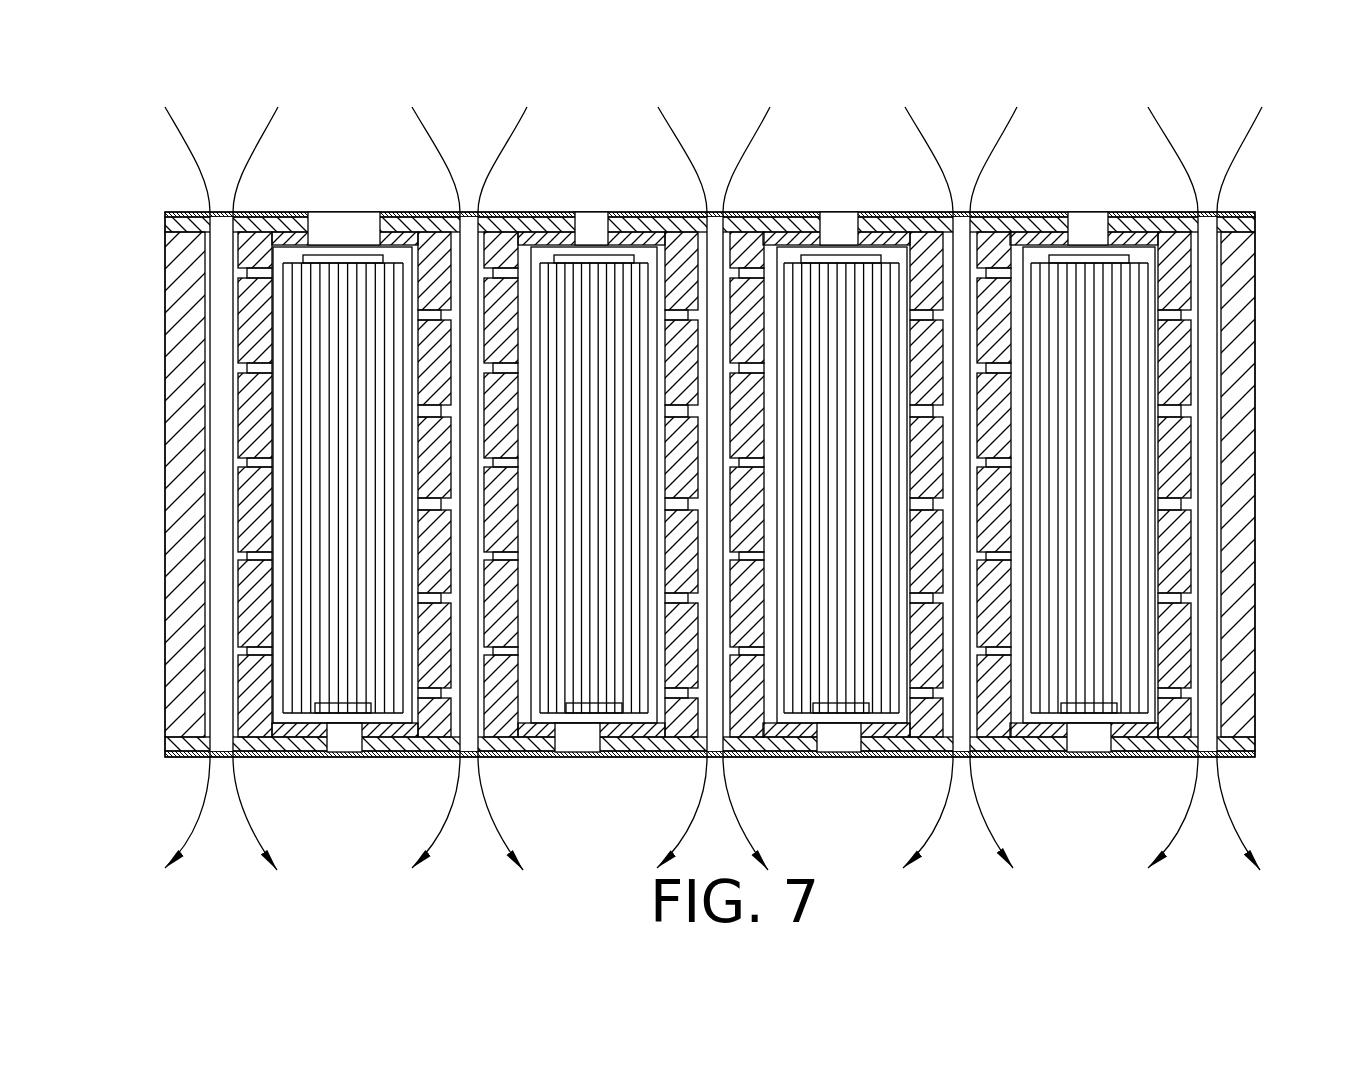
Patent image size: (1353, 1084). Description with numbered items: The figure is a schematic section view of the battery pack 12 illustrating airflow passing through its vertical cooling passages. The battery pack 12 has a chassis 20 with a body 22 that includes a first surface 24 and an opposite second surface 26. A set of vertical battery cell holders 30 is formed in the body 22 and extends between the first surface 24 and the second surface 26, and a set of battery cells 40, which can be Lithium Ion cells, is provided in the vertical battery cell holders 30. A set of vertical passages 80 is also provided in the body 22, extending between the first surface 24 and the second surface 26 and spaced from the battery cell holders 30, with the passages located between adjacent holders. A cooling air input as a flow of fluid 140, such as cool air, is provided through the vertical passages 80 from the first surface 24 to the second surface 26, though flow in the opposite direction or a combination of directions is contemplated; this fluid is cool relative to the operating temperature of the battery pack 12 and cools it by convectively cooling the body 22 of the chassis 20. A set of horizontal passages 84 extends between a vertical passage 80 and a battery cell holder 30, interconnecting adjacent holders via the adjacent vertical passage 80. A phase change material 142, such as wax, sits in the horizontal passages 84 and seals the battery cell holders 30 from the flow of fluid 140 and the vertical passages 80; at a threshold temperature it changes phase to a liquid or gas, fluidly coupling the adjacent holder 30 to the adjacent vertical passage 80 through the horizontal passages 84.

The battery pack 12 is at (95, 110).
The chassis 20 is at (168, 262).
The body 22 is at (185, 515).
The first surface 24 is at (510, 213).
The second surface 26 is at (507, 748).
The vertical battery cell holder 30 is at (523, 318).
The battery cell 40 is at (352, 272).
The vertical passage 80 is at (225, 342).
The horizontal passage 84 is at (243, 565).
The flow of fluid 140 is at (272, 118).
The phase change material 142 is at (255, 462).